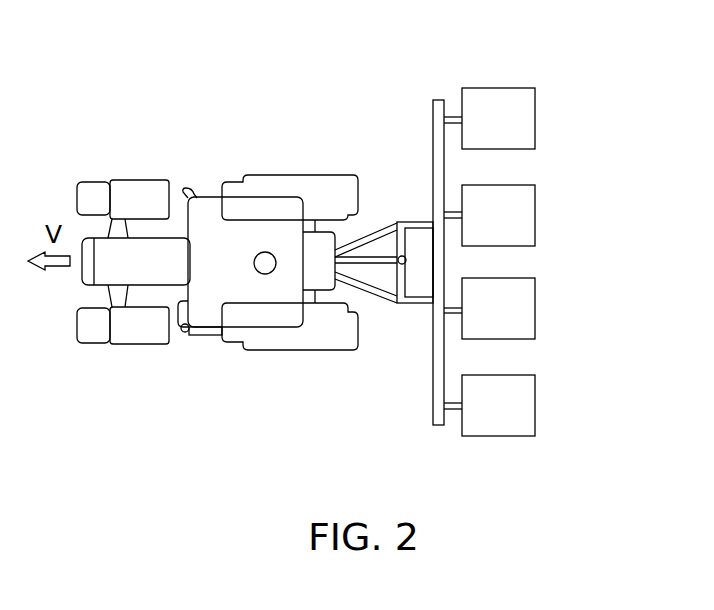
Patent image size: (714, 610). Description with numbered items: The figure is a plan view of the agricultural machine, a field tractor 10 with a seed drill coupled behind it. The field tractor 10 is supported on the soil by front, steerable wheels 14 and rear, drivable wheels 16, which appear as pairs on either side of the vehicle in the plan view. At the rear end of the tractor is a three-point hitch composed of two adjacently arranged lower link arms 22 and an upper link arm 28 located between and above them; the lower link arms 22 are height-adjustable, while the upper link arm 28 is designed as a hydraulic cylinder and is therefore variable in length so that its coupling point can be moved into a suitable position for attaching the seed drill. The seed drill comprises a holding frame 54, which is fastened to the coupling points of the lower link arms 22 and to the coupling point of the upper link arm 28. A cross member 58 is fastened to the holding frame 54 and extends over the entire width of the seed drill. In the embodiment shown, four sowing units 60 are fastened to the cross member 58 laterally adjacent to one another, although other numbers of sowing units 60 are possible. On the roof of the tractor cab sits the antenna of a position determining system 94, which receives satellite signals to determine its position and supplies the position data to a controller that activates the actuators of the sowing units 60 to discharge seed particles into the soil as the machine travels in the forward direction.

The field tractor 10 is at (282, 365).
The front wheels 14 is at (123, 344).
The rear wheels 16 is at (352, 335).
The lower link arms 22 is at (389, 222).
The upper link arm 28 is at (382, 227).
The holding frame 54 is at (410, 228).
The cross member 58 is at (437, 392).
The sowing units 60 is at (500, 102).
The position determining system 94 is at (262, 256).